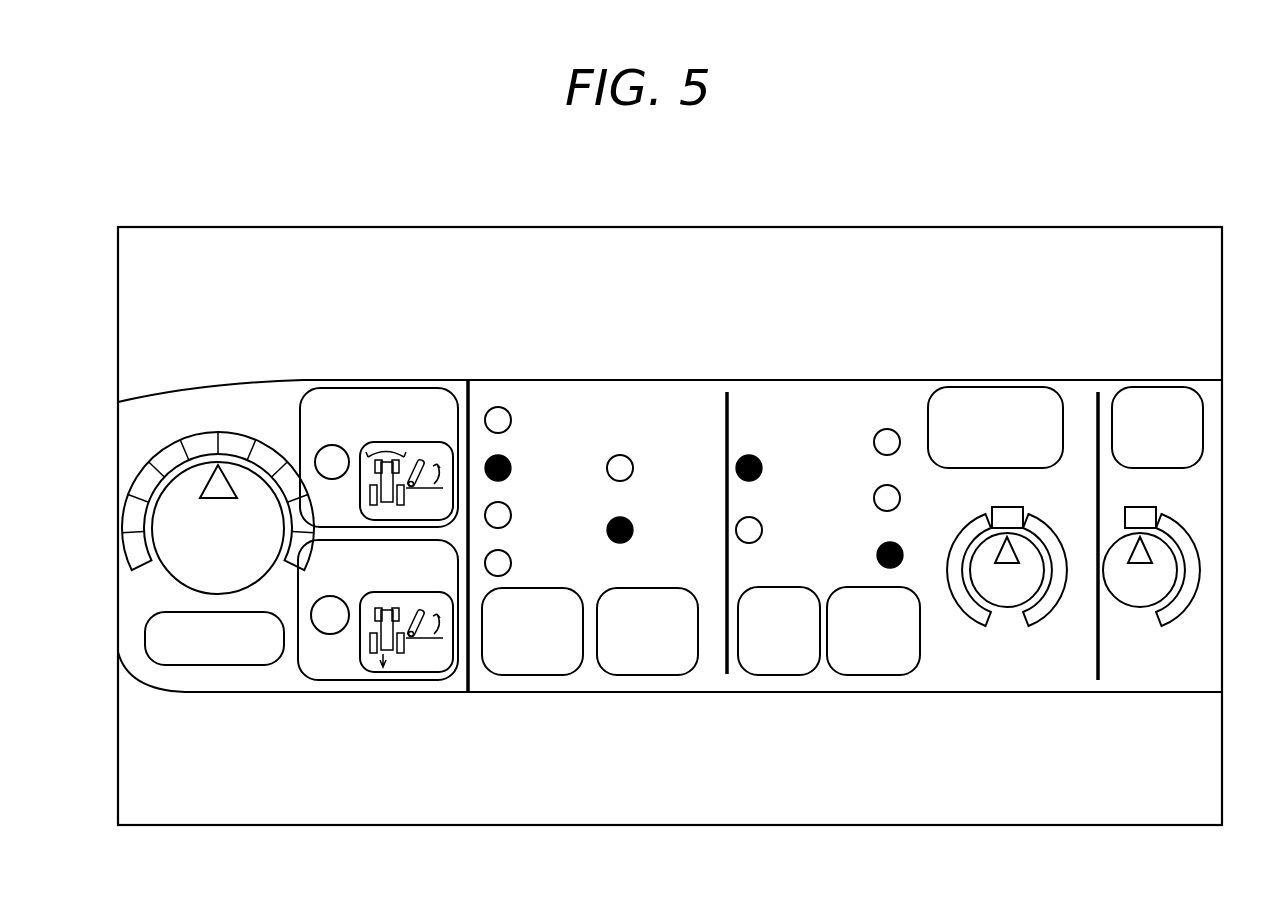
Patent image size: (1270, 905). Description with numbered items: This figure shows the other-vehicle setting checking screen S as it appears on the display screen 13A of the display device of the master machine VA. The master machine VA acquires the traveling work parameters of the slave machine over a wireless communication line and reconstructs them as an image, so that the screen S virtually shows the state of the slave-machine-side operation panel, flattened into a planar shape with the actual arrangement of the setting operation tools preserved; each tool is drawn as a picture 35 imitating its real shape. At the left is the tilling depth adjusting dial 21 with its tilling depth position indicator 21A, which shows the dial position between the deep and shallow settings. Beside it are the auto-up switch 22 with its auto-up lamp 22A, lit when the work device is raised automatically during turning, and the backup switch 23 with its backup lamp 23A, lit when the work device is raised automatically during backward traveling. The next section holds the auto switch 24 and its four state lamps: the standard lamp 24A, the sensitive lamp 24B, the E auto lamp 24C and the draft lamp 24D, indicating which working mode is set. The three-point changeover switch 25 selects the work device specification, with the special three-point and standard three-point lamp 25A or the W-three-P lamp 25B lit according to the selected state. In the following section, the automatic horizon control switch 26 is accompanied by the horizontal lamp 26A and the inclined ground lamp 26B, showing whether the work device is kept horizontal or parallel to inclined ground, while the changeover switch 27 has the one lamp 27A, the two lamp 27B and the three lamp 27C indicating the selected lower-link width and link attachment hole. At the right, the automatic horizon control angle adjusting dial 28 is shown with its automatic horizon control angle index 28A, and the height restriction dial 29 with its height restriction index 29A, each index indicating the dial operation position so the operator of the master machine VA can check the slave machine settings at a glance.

The display screen / panel 13A is at (670, 481).
The other-vehicle setting checking screen S is at (1013, 217).
The master machine VA is at (343, 181).
The tilling depth adjusting dial 21 is at (218, 549).
The tilling depth position indicator 21A is at (168, 455).
The auto-up switch 22 is at (346, 426).
The auto-up lamp 22A is at (318, 457).
The backup switch 23 is at (366, 663).
The backup lamp 23A is at (328, 635).
The auto switch 24 is at (506, 557).
The standard lamp 24A is at (501, 414).
The sensitive lamp 24B is at (490, 460).
The E auto lamp 24C is at (494, 527).
The draft lamp 24D is at (492, 576).
The 3P changeover switch 25 is at (643, 559).
The special 3P and standard 3P lamp 25A is at (623, 458).
The W3P lamp 25B is at (611, 525).
The automatic horizon control switch 26 is at (795, 562).
The horizontal lamp 26A is at (751, 458).
The inclined ground lamp 26B is at (747, 542).
The changeover switch 27 is at (864, 540).
The 1 lamp 27A is at (889, 432).
The 2 lamp 27B is at (877, 492).
The 3 lamp 27C is at (877, 555).
The automatic horizon control angle adjusting dial 28 is at (1007, 538).
The automatic horizon control angle index 28A is at (1046, 520).
The height restriction dial 29 is at (1158, 538).
The height restriction index 29A is at (1195, 522).
The picture 35 is at (221, 680).